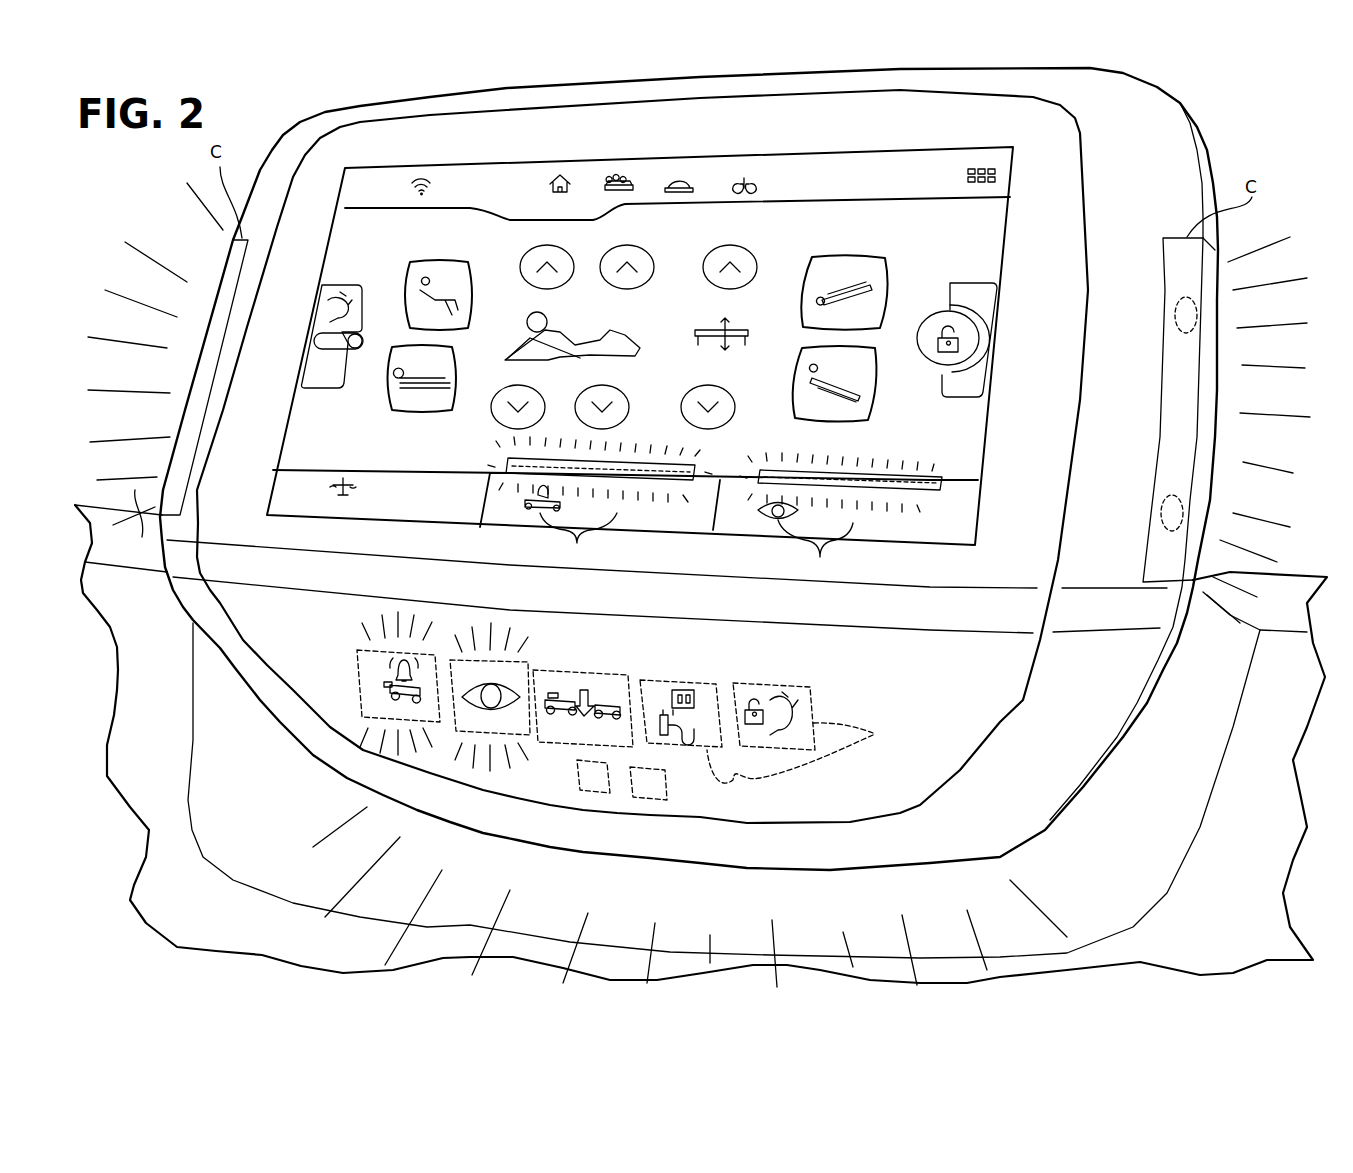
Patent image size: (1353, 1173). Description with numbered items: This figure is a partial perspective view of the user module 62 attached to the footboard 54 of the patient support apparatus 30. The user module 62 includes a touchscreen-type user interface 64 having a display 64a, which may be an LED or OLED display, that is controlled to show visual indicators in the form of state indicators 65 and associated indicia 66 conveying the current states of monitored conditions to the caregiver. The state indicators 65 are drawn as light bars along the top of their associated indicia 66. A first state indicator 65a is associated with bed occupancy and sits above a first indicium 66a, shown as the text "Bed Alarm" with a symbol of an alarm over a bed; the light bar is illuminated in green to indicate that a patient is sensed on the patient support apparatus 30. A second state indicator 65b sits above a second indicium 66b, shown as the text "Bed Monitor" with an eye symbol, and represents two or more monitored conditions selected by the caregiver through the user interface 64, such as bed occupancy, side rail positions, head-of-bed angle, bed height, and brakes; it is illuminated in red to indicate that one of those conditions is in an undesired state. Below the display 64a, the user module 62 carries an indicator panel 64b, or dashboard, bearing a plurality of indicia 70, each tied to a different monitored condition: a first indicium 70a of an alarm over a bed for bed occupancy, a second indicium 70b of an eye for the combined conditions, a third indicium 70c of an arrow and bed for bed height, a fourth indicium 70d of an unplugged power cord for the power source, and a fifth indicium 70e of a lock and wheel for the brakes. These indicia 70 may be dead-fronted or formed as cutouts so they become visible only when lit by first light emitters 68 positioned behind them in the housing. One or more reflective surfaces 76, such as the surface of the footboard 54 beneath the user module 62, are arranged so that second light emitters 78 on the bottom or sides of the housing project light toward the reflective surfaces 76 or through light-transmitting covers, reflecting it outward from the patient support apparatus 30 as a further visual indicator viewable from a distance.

The patient support apparatus 30 is at (113, 502).
The footboard 54 is at (134, 491).
The user module 62 is at (422, 90).
The user interface 64 is at (297, 297).
The display 64a is at (1008, 547).
The indicator panel 64b is at (915, 688).
The state indicators 65 is at (752, 460).
The first state indicator 65a is at (628, 458).
The second state indicator 65b is at (945, 470).
The indicia 66 is at (781, 547).
The first indicium 66a is at (578, 539).
The second indicium 66b is at (815, 550).
The first light emitters 68 is at (803, 753).
The plurality of indicia 70 is at (602, 700).
The first indicium 70a is at (372, 700).
The second indicium 70b is at (508, 718).
The third indicium 70c is at (577, 672).
The fourth indicium 70d is at (678, 680).
The fifth indicium 70e is at (775, 683).
The reflective surfaces 76 is at (1177, 800).
The second light emitters 78 is at (1198, 315).